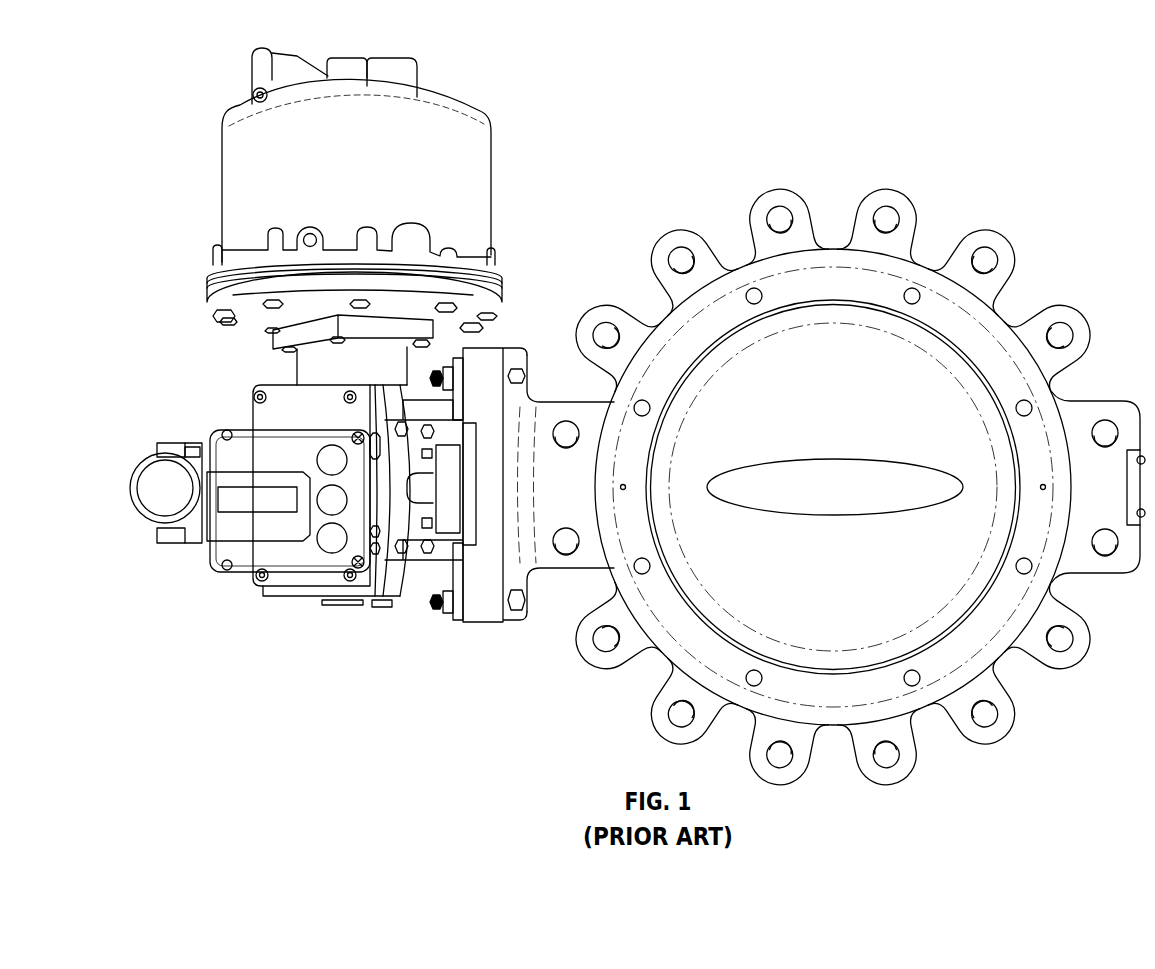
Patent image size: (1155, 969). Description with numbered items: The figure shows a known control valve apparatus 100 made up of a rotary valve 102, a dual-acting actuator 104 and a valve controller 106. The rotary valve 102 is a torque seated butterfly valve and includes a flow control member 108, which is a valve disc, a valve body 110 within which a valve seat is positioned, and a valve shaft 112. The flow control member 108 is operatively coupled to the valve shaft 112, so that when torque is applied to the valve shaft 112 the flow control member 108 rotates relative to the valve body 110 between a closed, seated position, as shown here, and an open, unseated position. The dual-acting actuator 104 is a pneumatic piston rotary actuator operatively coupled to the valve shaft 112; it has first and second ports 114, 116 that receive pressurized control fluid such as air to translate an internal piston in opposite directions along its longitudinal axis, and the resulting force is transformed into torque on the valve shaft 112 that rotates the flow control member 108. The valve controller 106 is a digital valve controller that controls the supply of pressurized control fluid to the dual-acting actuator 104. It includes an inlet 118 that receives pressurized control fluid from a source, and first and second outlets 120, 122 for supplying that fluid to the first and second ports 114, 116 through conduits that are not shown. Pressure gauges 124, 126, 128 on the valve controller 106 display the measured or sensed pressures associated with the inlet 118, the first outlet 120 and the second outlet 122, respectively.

The control valve apparatus 100 is at (694, 118).
The rotary valve 102 is at (1003, 323).
The dual-acting actuator 104 is at (444, 117).
The valve controller 106 is at (232, 467).
The flow control member 108 is at (910, 605).
The valve body 110 is at (1035, 430).
The valve shaft 112 is at (420, 492).
The first port 114 is at (255, 94).
The second port 116 is at (302, 244).
The inlet 118 is at (378, 532).
The first outlet 120 is at (372, 437).
The second outlet 122 is at (427, 522).
The pressure gauge 124 is at (318, 461).
The pressure gauge 126 is at (320, 502).
The pressure gauge 128 is at (321, 542).